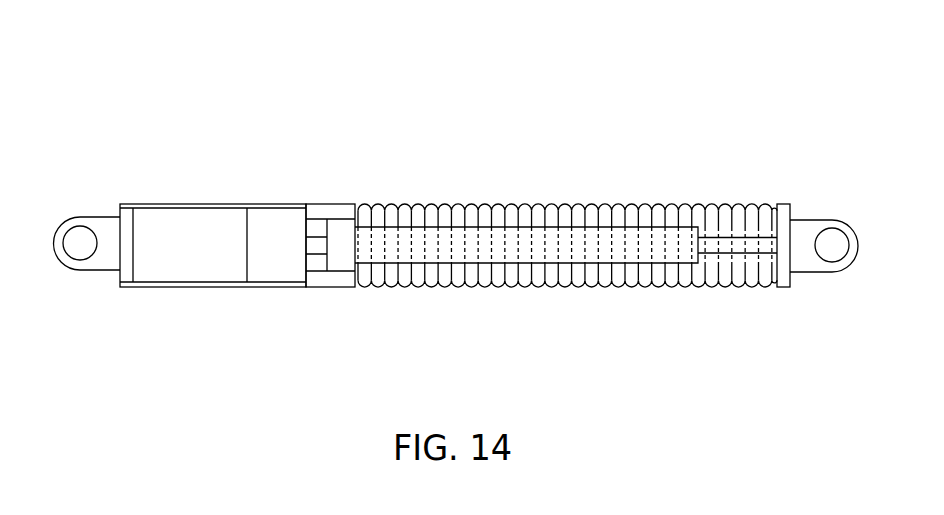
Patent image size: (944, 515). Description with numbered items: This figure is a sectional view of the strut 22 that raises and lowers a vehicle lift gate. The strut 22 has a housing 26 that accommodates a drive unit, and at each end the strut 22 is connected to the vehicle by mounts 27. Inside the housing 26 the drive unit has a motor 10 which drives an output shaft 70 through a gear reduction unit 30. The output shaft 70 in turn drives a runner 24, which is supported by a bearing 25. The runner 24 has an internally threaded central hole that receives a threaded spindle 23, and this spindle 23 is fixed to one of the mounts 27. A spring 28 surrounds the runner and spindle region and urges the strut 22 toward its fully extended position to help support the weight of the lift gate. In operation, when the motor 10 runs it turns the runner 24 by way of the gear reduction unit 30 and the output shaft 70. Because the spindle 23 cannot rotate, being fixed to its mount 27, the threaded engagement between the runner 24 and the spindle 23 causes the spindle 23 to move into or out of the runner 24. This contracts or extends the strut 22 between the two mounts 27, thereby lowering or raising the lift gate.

The strut 22 is at (659, 84).
The motor 10 is at (213, 199).
The housing 26 is at (155, 237).
The mounts 27 is at (80, 242).
The gear reduction unit 30 is at (283, 237).
The bearing 25 is at (338, 238).
The output shaft 70 is at (313, 245).
The spring 28 is at (505, 203).
The runner 24 is at (577, 248).
The threaded spindle 23 is at (731, 245).